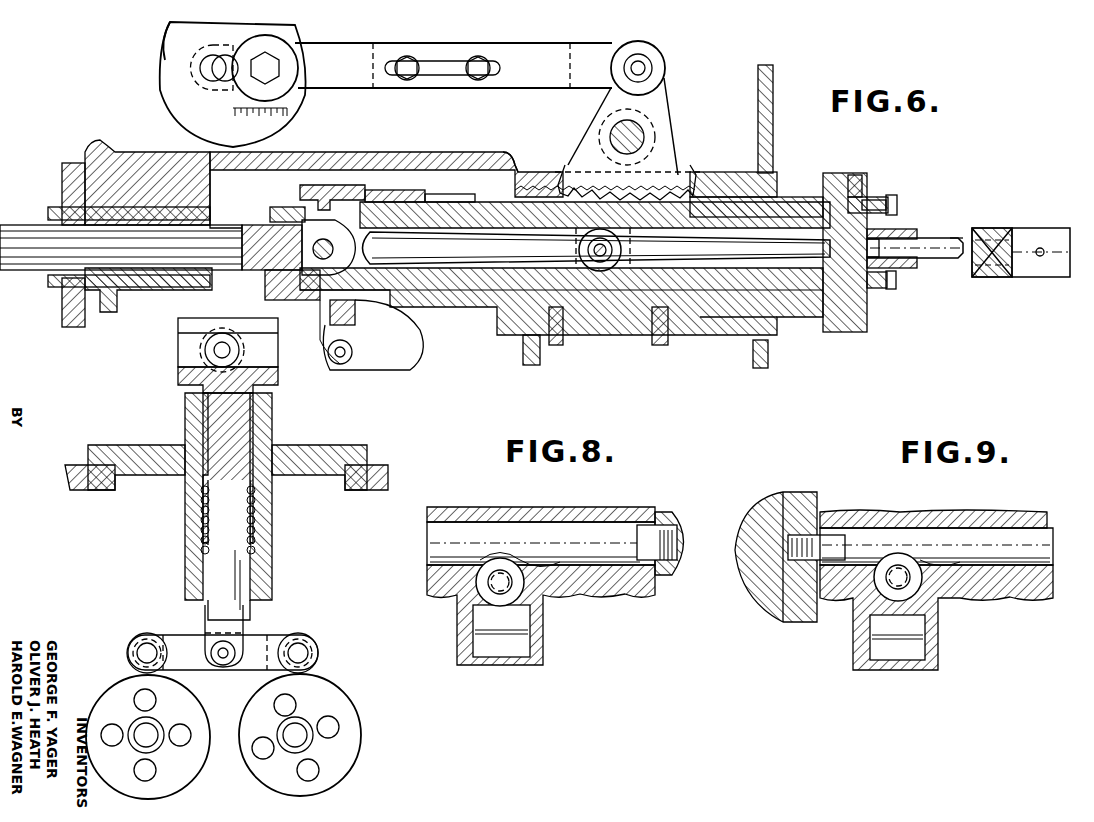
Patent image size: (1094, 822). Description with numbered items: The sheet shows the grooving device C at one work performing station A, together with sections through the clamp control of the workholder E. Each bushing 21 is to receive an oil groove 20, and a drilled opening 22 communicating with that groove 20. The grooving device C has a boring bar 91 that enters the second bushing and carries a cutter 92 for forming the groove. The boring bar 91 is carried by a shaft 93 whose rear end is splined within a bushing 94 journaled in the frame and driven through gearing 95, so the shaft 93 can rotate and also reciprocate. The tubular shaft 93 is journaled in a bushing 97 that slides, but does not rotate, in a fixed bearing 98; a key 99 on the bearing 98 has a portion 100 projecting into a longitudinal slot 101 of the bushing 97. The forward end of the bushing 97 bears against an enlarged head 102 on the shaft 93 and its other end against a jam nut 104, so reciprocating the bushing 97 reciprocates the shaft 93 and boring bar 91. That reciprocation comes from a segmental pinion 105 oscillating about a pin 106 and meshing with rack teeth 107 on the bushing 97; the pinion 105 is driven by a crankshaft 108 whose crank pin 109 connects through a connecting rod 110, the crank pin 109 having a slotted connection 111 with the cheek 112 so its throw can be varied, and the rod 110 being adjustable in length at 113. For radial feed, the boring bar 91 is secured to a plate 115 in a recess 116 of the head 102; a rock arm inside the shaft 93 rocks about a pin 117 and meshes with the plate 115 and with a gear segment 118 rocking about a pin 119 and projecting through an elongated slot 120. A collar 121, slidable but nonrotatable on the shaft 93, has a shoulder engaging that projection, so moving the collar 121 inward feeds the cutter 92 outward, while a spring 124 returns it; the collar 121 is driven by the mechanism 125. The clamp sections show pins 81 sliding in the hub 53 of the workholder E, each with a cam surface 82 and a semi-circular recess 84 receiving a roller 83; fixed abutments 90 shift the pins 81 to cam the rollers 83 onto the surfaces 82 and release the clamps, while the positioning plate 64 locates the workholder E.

In FIG. 6, the oil grooves 20 is at (992, 272).
In FIG. 6, the bushings 21 is at (990, 230).
In FIG. 6, the openings 22 is at (1038, 250).
In FIG. 8, the hub 53 is at (612, 585).
In FIG. 9, the hub 53 is at (996, 600).
In FIG. 9, the positioning plate 64 is at (806, 500).
In FIG. 8, the pins 81 is at (590, 537).
In FIG. 9, the pins 81 is at (878, 535).
In FIG. 8, the cam surface 82 is at (528, 566).
In FIG. 9, the cam surface 82 is at (938, 566).
In FIG. 8, the roller 83 is at (512, 594).
In FIG. 9, the roller 83 is at (885, 588).
In FIG. 8, the semi-circular recess 84 is at (462, 572).
In FIG. 9, the semi-circular recess 84 is at (900, 558).
In FIG. 8, the abutments 90 is at (655, 540).
In FIG. 6, the boring bar 91 is at (935, 262).
In FIG. 6, the cutter 92 is at (950, 236).
In FIG. 6, the shaft 93 is at (38, 256).
In FIG. 6, the bushing 94 is at (152, 272).
In FIG. 6, the gearing 95 is at (64, 193).
In FIG. 6, the bushing 97 is at (800, 196).
In FIG. 6, the bearing 98 is at (714, 318).
In FIG. 6, the key 99 is at (616, 320).
In FIG. 6, the projecting portion 100 is at (550, 318).
In FIG. 6, the slot 101 is at (528, 296).
In FIG. 6, the enlarged head 102 is at (828, 300).
In FIG. 6, the jam nut 104 is at (388, 300).
In FIG. 6, the segmental pinion 105 is at (660, 163).
In FIG. 6, the pin 106 is at (640, 138).
In FIG. 6, the rack teeth 107 is at (695, 180).
In FIG. 6, the crankshaft 108 is at (175, 96).
In FIG. 6, the crank pin 109 is at (272, 70).
In FIG. 6, the connecting rod 110 is at (500, 85).
In FIG. 6, the slotted connection 111 is at (222, 78).
In FIG. 6, the cheek 112 is at (172, 58).
In FIG. 6, the adjustable connection 113 is at (470, 76).
In FIG. 6, the plate 115 is at (866, 200).
In FIG. 6, the recess 116 is at (853, 178).
In FIG. 6, the pin 117 is at (608, 250).
In FIG. 6, the gear segment 118 is at (313, 288).
In FIG. 6, the pin 119 is at (318, 242).
In FIG. 6, the elongated slot 120 is at (272, 207).
In FIG. 6, the collar 121 is at (345, 183).
In FIG. 6, the spring 124 is at (866, 184).
In FIG. 6, the collar actuating mechanism 125 is at (182, 482).
In FIG. 6, the work performing station A is at (954, 226).
In FIG. 6, the grooving device C is at (522, 170).
In FIG. 8, the workholder E is at (584, 596).
In FIG. 9, the workholder E is at (957, 604).